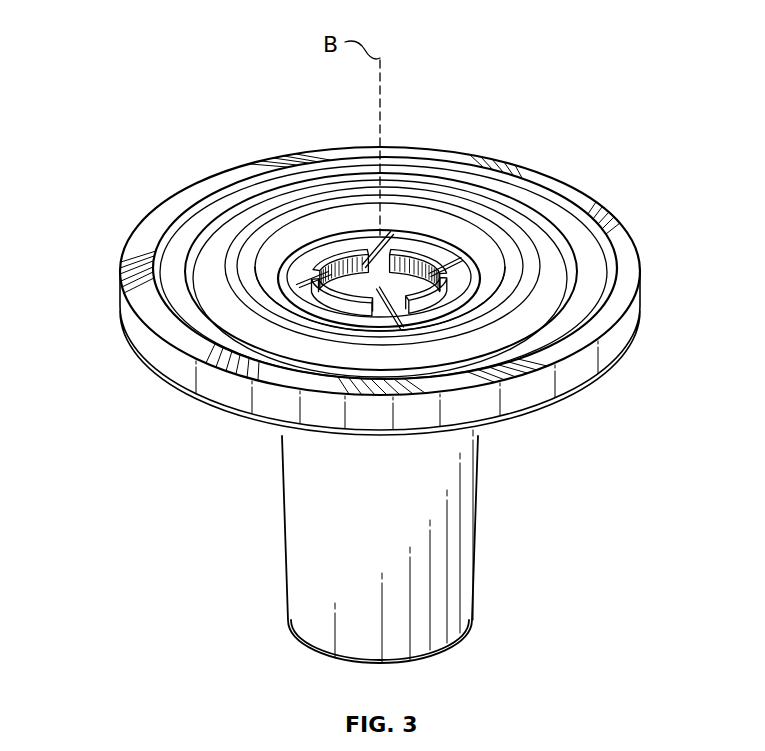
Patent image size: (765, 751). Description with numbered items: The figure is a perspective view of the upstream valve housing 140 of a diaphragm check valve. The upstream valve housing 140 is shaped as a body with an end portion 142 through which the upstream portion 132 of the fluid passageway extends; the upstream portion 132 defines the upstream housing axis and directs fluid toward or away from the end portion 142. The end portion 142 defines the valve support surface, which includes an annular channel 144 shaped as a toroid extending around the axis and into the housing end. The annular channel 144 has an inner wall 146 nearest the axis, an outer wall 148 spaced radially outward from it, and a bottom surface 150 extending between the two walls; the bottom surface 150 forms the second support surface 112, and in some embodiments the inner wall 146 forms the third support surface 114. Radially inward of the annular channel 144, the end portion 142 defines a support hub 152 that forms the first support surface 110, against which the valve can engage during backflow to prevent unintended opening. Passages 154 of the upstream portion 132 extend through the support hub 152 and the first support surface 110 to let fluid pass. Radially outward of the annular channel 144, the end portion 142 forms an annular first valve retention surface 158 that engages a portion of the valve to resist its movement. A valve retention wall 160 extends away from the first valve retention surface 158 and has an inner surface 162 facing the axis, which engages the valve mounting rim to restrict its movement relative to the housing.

The upstream valve housing 140 is at (93, 143).
The end portion 142 is at (580, 211).
The inner wall 146 is at (207, 337).
The first valve retention surface 158 is at (175, 238).
The valve retention wall 160 is at (166, 242).
The second support surface 112 is at (508, 292).
The first support surface 110 is at (473, 276).
The outer wall 148 is at (273, 237).
The bottom surface 150 is at (210, 277).
The annular channel 144 is at (398, 222).
The third support surface 114 is at (472, 320).
The support hub 152 is at (299, 309).
The passages 154 is at (352, 262).
The inner surface 162 is at (257, 290).
The upstream portion 132 is at (437, 668).